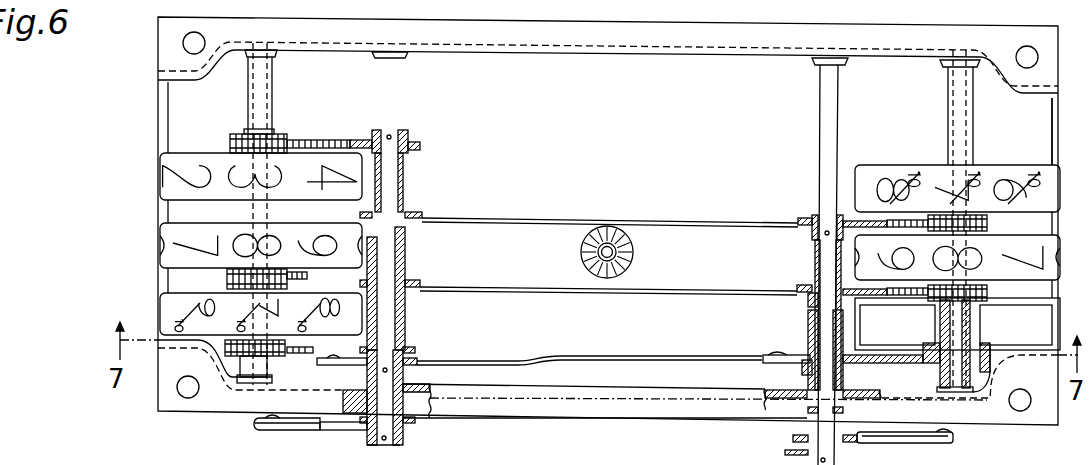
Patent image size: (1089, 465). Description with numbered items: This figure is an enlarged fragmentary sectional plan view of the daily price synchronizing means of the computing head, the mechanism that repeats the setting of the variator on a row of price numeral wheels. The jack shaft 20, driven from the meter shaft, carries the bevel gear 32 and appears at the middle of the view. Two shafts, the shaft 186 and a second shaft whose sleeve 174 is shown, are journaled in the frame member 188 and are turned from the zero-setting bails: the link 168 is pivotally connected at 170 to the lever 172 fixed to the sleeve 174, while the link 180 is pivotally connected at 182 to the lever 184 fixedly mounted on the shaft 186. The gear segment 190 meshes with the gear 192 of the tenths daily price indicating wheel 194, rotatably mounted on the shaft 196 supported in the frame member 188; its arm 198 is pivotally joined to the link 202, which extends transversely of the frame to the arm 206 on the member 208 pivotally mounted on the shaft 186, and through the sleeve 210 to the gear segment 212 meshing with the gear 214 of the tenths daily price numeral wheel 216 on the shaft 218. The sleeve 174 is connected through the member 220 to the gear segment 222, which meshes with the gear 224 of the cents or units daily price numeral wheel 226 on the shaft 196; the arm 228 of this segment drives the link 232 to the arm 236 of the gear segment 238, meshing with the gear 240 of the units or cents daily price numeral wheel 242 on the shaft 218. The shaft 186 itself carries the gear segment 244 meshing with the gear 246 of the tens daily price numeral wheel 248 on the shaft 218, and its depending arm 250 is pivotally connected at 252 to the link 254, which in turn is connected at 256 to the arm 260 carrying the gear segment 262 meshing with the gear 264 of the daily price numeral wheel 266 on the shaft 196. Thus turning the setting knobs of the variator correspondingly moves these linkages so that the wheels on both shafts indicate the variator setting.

The jack shaft 20 is at (606, 244).
The bevel gear 32 is at (625, 236).
The link 168 is at (952, 433).
The pivotal connection 170 is at (942, 437).
The lever 172 is at (905, 439).
The sleeve 174 is at (806, 431).
The link 180 is at (300, 420).
The pivotal connection 182 is at (264, 425).
The lever 184 is at (281, 424).
The shaft 186 is at (387, 421).
The frame member 188 is at (595, 406).
The gear segment 190 is at (871, 220).
The gear 192 is at (985, 222).
The tenths daily price indicating wheel 194 is at (1037, 166).
The shaft 196 is at (957, 97).
The arm 198 is at (797, 218).
The link 202 is at (545, 208).
The arm 206 is at (416, 215).
The member 208 is at (403, 214).
The sleeve 210 is at (401, 347).
The gear segment 212 is at (300, 353).
The gear 214 is at (230, 357).
The tenths daily price numeral wheel 216 is at (160, 298).
The shaft 218 is at (258, 96).
The member 220 is at (808, 301).
The gear segment 222 is at (907, 300).
The gear 224 is at (988, 296).
The units daily price numeral wheel 226 is at (1020, 253).
The arm 228 is at (798, 285).
The link 232 is at (548, 287).
The arm 236 is at (416, 283).
The gear segment 238 is at (291, 270).
The gear 240 is at (228, 272).
The units daily price numeral wheel 242 is at (160, 228).
The gear segment 244 is at (316, 140).
The gear 246 is at (232, 142).
The tens daily price numeral wheel 248 is at (162, 170).
The depending arm 250 is at (360, 398).
The pivotal connection 252 is at (328, 366).
The link 254 is at (531, 359).
The pivotal connection 256 is at (783, 354).
The arm 260 is at (790, 353).
The gear segment 262 is at (910, 363).
The gear 264 is at (993, 372).
The daily price numeral wheel 266 is at (1014, 343).